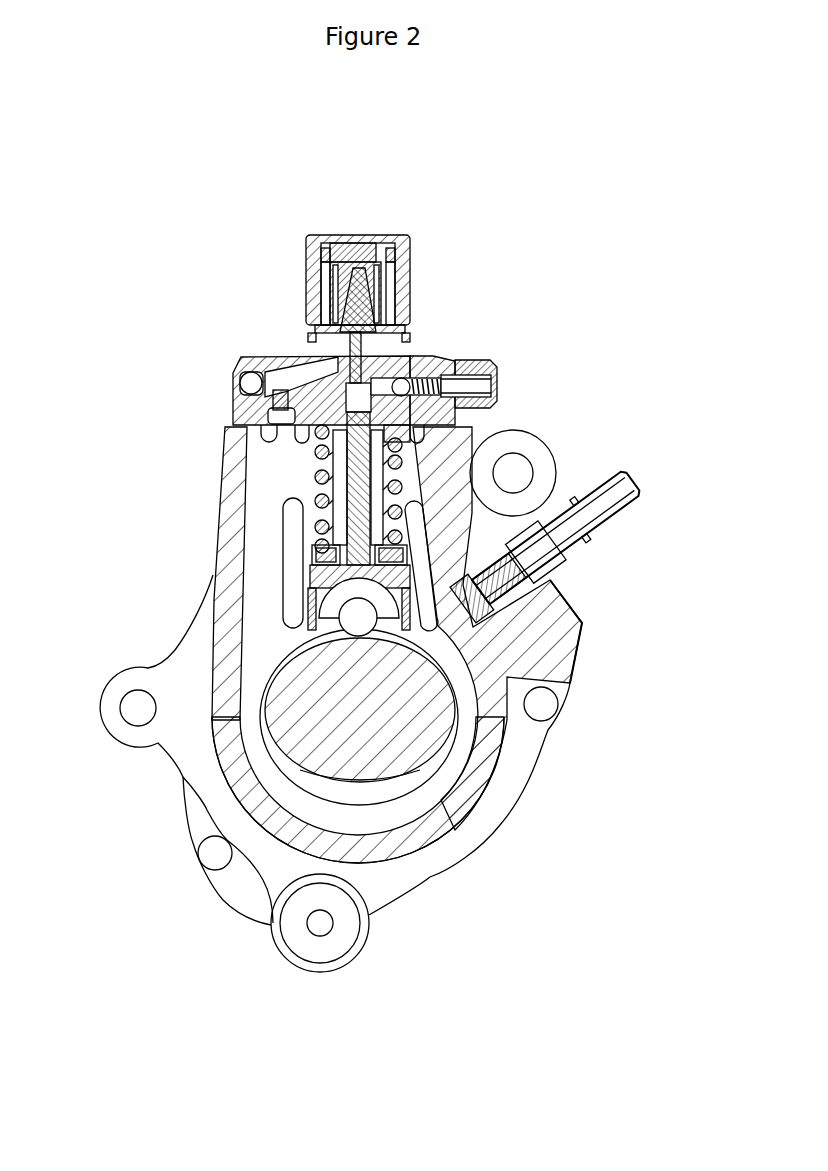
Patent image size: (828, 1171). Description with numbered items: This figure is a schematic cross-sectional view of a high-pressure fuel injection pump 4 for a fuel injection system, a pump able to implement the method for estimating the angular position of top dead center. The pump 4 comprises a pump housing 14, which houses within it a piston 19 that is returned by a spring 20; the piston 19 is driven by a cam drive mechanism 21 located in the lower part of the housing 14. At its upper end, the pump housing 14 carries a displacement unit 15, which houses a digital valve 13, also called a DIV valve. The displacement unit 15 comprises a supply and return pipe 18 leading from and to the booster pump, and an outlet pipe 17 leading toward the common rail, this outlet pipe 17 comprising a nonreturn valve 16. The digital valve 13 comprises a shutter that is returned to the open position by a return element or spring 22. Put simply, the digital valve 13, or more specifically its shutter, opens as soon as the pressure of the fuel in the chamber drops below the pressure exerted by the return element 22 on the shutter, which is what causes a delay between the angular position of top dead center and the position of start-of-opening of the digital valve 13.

The high-pressure fuel injection pump 4 is at (460, 875).
The digital valve 13 is at (407, 243).
The pump housing 14 is at (218, 585).
The displacement unit 15 is at (310, 334).
The nonreturn valve 16 is at (447, 358).
The outlet pipe 17 is at (482, 383).
The supply and return pipe 18 is at (262, 358).
The piston 19 is at (362, 485).
The spring 20 is at (407, 548).
The cam drive mechanism 21 is at (380, 710).
The return element or spring 22 is at (338, 242).